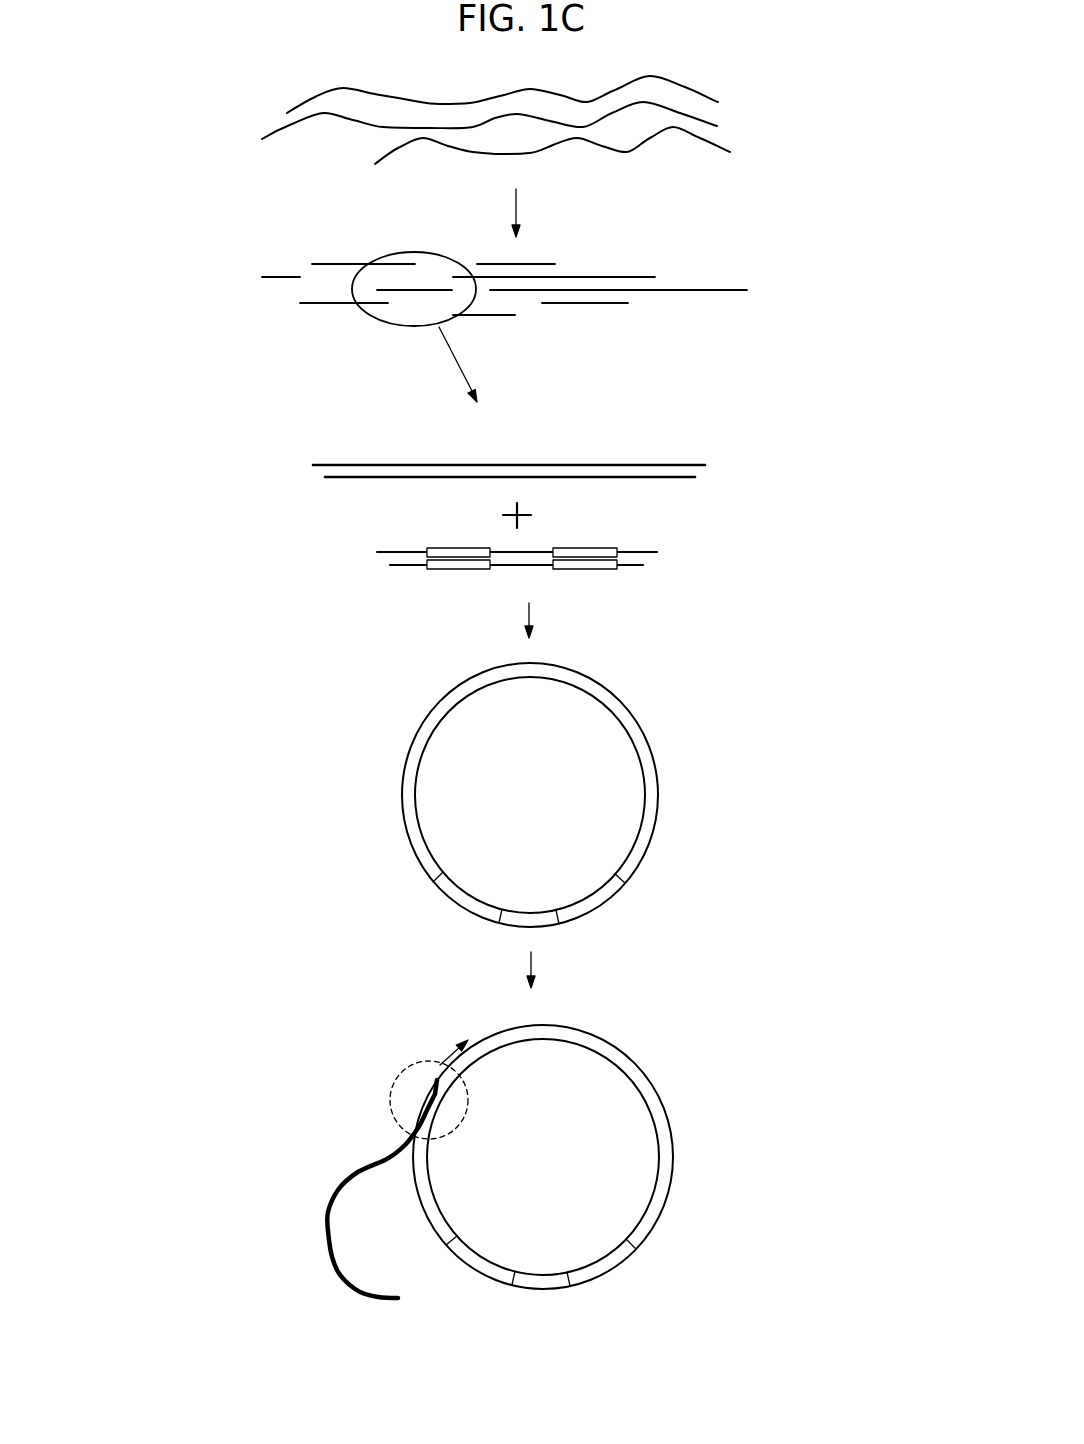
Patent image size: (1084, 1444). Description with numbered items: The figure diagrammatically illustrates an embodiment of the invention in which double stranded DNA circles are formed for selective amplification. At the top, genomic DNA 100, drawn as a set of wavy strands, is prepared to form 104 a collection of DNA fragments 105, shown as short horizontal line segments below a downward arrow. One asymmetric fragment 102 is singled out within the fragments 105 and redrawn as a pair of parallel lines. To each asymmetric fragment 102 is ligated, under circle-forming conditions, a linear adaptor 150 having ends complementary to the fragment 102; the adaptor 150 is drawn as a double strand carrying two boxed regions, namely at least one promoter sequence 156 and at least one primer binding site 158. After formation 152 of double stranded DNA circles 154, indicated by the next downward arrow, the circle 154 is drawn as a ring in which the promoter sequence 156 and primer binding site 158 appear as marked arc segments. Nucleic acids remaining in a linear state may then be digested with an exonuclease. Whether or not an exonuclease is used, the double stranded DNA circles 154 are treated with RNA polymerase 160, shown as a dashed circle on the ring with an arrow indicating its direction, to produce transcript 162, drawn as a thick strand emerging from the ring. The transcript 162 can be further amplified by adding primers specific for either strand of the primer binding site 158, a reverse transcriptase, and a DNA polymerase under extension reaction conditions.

The genomic DNA 100 is at (755, 95).
The asymmetric fragment 102 is at (403, 252).
The forming step 104 is at (545, 213).
The DNA fragments 105 is at (730, 258).
The linear adaptor 150 is at (479, 563).
The formation step 152 is at (565, 620).
The double stranded DNA circles 154 is at (657, 752).
The promoter sequence 156 is at (447, 547).
The primer binding site 158 is at (597, 547).
The RNA polymerase 160 is at (393, 1089).
The transcript 162 is at (328, 1202).